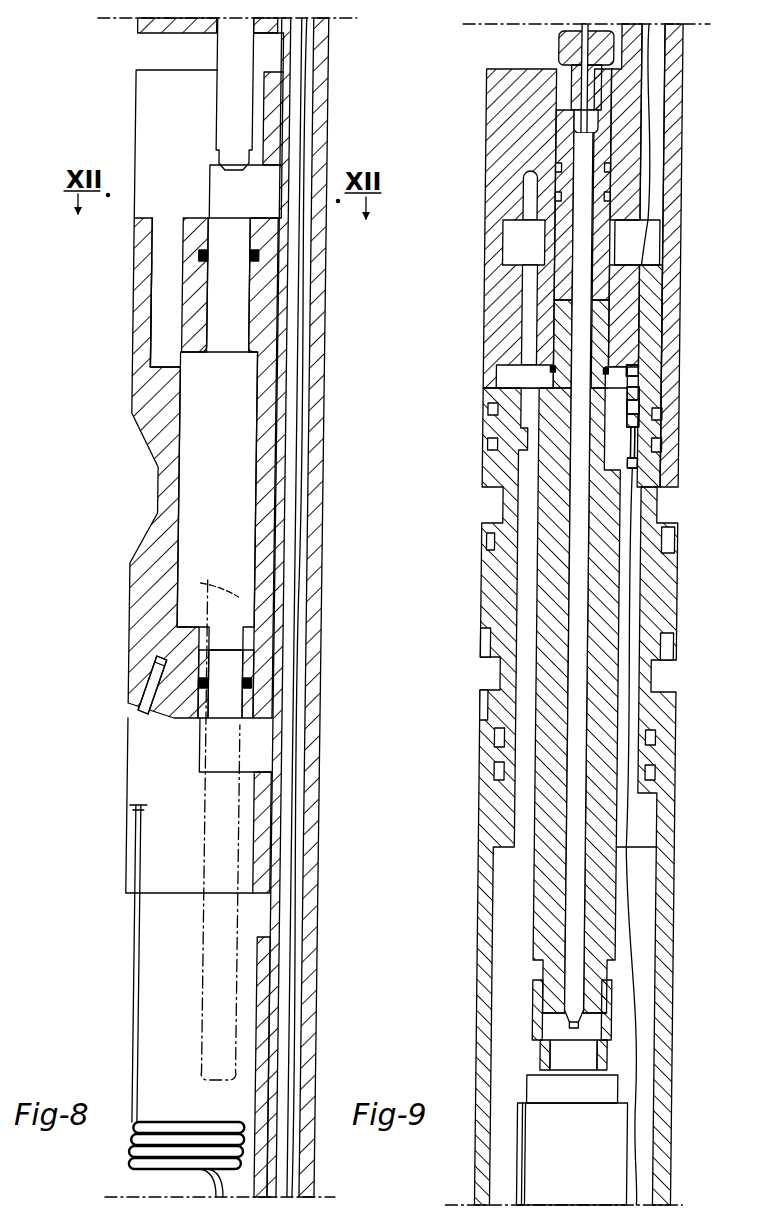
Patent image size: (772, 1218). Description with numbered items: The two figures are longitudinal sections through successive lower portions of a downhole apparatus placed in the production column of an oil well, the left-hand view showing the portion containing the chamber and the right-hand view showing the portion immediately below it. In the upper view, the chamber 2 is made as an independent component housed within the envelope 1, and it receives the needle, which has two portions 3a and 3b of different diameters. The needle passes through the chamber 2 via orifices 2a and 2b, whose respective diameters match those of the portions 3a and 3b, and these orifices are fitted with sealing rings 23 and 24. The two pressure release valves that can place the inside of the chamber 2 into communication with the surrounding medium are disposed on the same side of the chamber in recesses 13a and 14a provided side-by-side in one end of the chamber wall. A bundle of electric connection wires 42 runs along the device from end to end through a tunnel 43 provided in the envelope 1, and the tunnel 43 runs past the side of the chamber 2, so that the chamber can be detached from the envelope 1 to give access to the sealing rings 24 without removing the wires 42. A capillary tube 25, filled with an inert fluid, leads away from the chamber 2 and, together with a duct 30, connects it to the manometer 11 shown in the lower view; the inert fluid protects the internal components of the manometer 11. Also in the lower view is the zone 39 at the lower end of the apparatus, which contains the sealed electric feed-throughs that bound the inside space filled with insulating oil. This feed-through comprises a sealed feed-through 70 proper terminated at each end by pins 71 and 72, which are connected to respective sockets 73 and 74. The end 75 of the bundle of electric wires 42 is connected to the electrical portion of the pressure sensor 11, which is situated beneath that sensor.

In FIG. 8, the envelope 1 is at (327, 556).
In FIG. 9, the envelope 1 is at (482, 432).
In FIG. 8, the chamber 2 is at (222, 483).
In FIG. 8, the orifice 2a is at (232, 315).
In FIG. 8, the orifice 2b is at (230, 665).
In FIG. 8, the needle portion 3a is at (215, 597).
In FIG. 8, the needle portion 3b is at (228, 117).
In FIG. 9, the manometer 11 is at (580, 1156).
In FIG. 8, the recess 13a is at (165, 331).
In FIG. 8, the recess 14a is at (109, 324).
In FIG. 8, the sealing ring 23 is at (200, 258).
In FIG. 8, the sealing ring 24 is at (256, 686).
In FIG. 8, the capillary tube 25 is at (140, 981).
In FIG. 9, the capillary tube 25 is at (560, 48).
In FIG. 9, the duct 30 is at (572, 925).
In FIG. 9, the zone 39 is at (693, 265).
In FIG. 8, the bundle of electric connection wires 42 is at (298, 896).
In FIG. 9, the bundle of electric connection wires 42 is at (650, 105).
In FIG. 8, the tunnel 43 is at (305, 464).
In FIG. 9, the tunnel 43 is at (655, 150).
In FIG. 9, the sealed feed-through 70 is at (640, 389).
In FIG. 9, the pin 71 is at (636, 408).
In FIG. 9, the pin 72 is at (640, 462).
In FIG. 9, the socket 73 is at (640, 372).
In FIG. 9, the socket 74 is at (640, 468).
In FIG. 9, the end of the bundle of electric wires 75 is at (640, 1052).